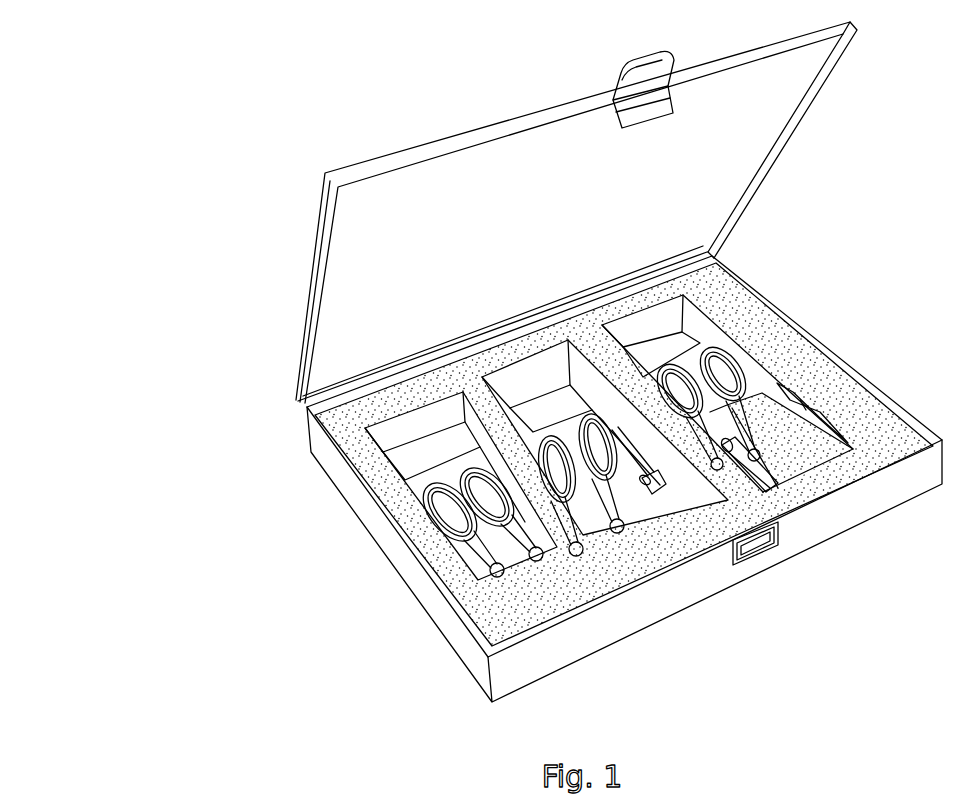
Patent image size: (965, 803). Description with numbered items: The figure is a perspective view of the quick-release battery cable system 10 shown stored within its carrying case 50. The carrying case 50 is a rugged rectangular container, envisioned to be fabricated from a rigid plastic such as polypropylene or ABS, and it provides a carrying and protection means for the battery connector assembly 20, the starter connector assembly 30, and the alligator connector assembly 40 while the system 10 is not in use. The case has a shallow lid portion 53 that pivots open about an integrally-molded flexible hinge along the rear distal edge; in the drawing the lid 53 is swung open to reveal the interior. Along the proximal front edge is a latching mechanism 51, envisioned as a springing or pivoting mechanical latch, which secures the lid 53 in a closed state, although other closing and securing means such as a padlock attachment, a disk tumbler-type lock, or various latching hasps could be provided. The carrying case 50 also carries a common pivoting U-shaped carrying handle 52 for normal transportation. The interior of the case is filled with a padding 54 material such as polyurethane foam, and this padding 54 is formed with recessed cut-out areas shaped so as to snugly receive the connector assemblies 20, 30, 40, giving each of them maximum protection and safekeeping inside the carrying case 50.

The quick-release battery cable system 10 is at (131, 130).
The battery connector assembly 20 is at (643, 493).
The starter connector assembly 30 is at (420, 448).
The alligator connector assembly 40 is at (672, 340).
The carrying case 50 is at (388, 620).
The latching mechanism 51 is at (653, 107).
The carrying handle 52 is at (582, 87).
The lid portion 53 is at (327, 218).
The padding 54 is at (885, 412).